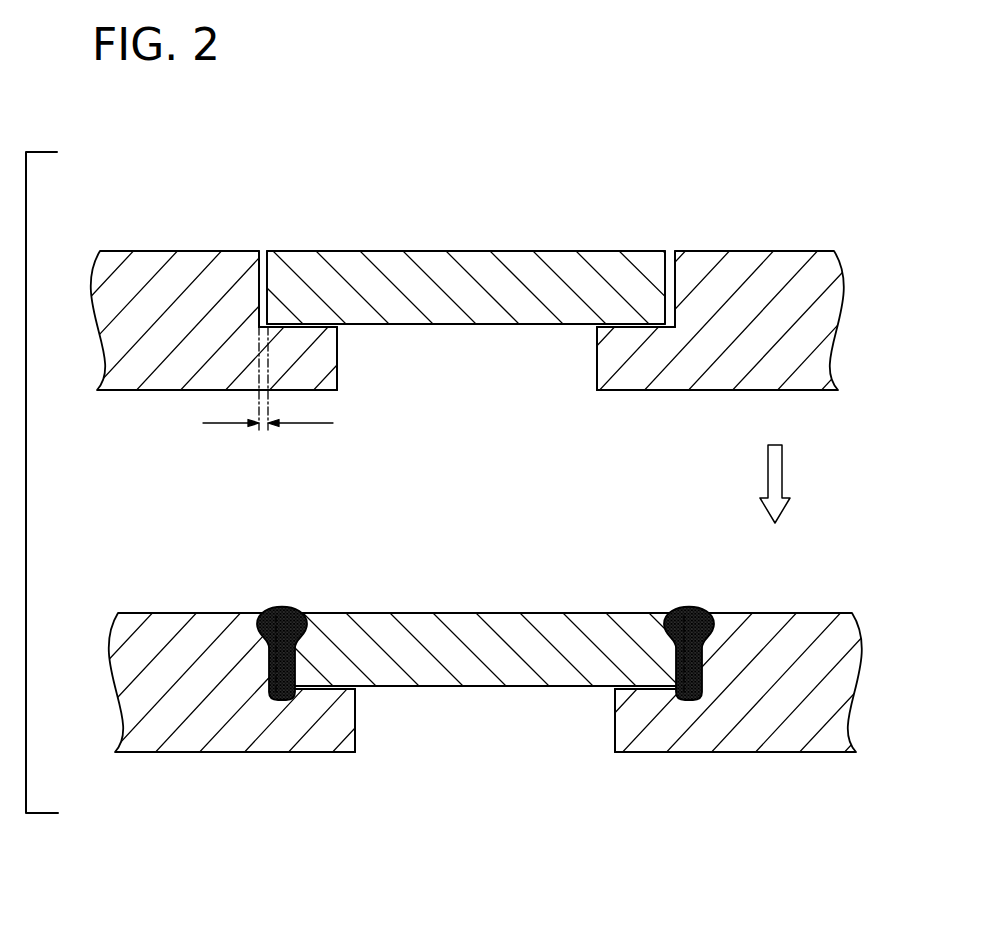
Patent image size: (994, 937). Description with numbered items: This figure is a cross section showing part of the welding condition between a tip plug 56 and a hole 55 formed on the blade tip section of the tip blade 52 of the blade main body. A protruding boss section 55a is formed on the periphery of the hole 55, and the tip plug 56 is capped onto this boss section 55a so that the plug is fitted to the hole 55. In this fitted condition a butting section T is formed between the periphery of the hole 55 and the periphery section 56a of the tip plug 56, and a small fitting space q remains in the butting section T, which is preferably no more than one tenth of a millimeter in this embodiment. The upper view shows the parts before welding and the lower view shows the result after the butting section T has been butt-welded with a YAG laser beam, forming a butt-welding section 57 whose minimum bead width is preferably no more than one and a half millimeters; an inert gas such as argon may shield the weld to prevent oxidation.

The tip blade 52 is at (158, 253).
The hole 55 is at (540, 372).
The protruding boss section 55a is at (328, 357).
The tip plug 56 is at (437, 250).
The periphery section 56a is at (264, 260).
The butt-welding section 57 is at (283, 627).
The butting section T is at (263, 252).
The fitting space q is at (268, 391).